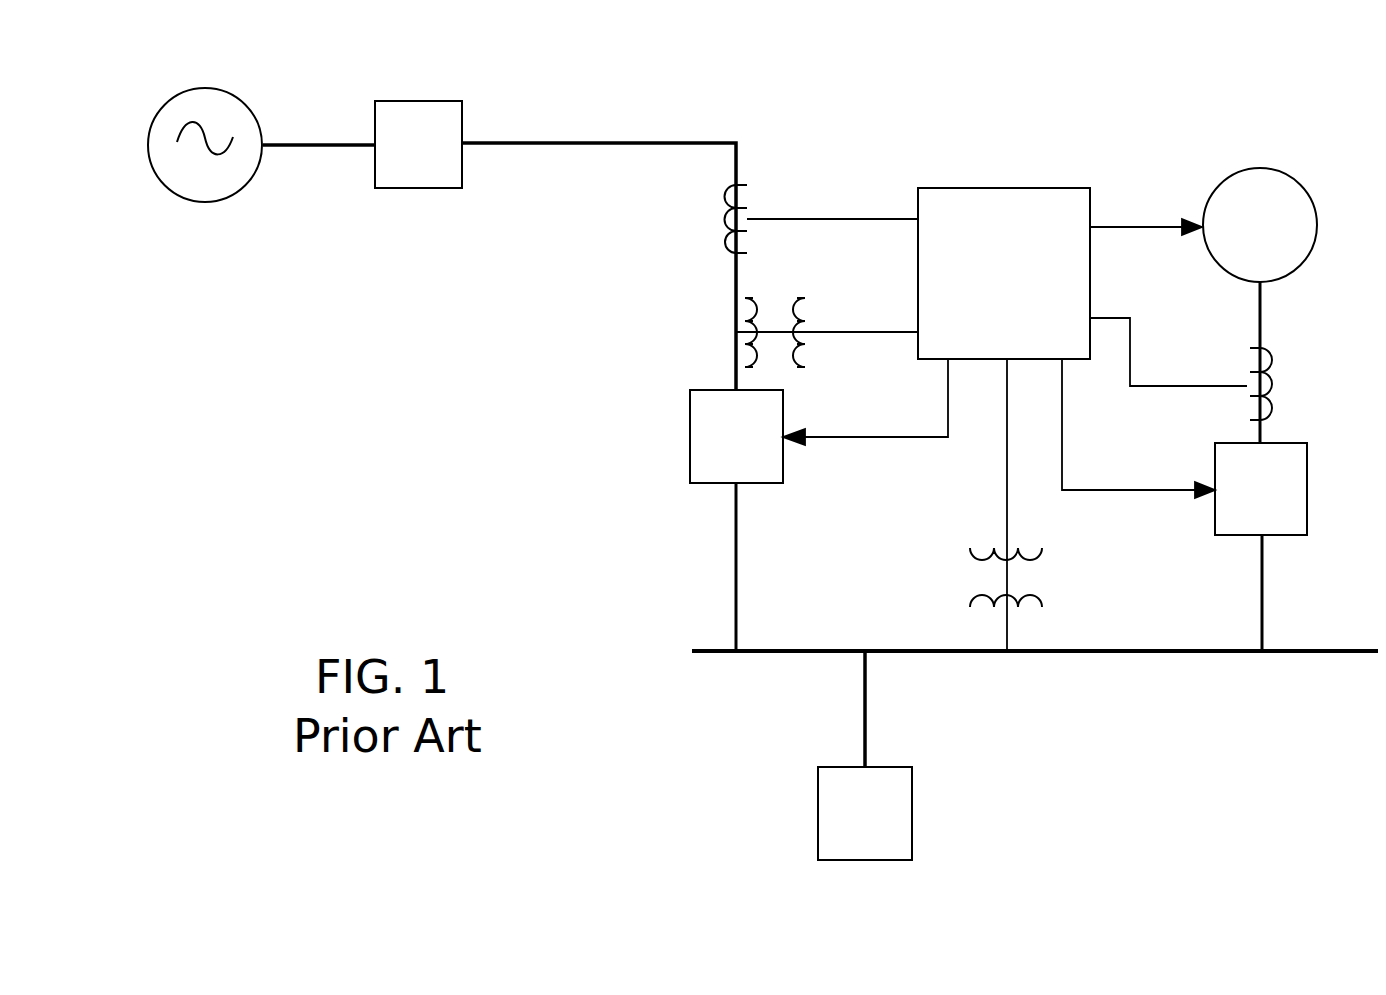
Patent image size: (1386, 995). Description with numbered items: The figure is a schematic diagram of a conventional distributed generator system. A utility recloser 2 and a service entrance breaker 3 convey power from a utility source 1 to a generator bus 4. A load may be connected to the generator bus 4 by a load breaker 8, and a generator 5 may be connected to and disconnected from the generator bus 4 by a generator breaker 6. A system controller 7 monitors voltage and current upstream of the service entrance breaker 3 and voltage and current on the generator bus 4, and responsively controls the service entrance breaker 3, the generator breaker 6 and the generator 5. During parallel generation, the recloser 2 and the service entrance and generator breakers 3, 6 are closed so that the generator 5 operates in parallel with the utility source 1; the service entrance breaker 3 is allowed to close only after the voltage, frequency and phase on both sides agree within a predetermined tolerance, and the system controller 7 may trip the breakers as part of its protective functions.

The utility source 1 is at (205, 87).
The utility recloser 2 is at (420, 100).
The service entrance breaker 3 is at (690, 435).
The generator bus 4 is at (1124, 653).
The generator 5 is at (1318, 227).
The generator breaker 6 is at (1307, 490).
The system controller 7 is at (1003, 187).
The load breaker 8 is at (912, 813).